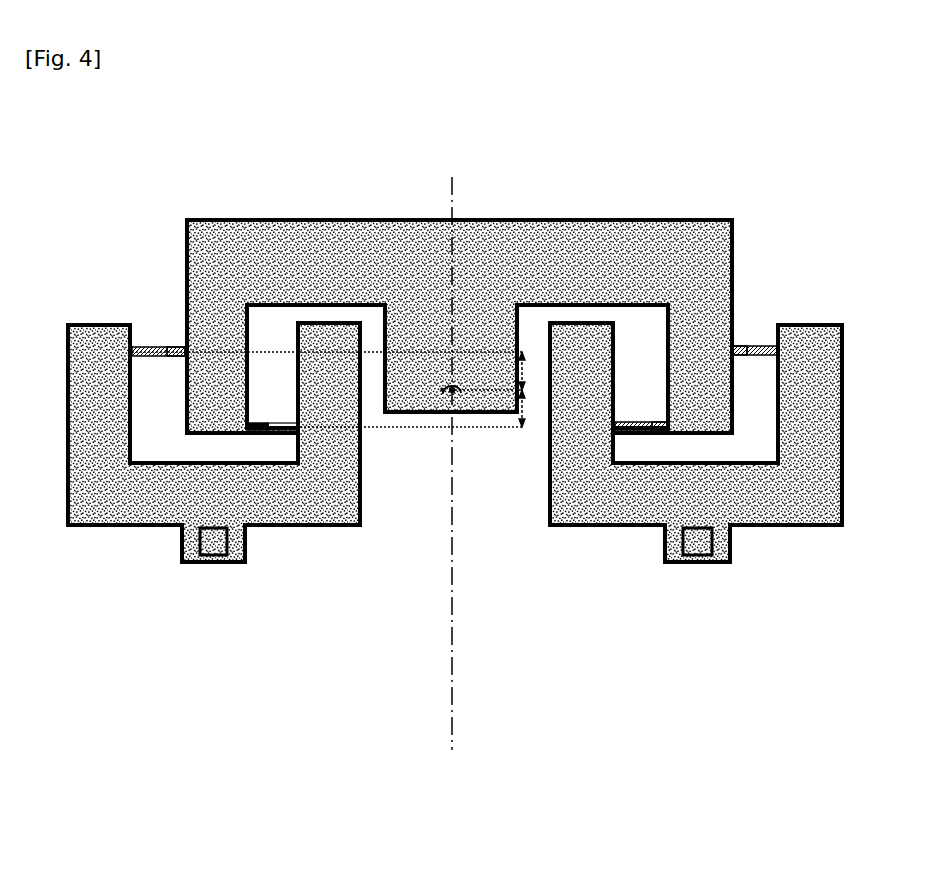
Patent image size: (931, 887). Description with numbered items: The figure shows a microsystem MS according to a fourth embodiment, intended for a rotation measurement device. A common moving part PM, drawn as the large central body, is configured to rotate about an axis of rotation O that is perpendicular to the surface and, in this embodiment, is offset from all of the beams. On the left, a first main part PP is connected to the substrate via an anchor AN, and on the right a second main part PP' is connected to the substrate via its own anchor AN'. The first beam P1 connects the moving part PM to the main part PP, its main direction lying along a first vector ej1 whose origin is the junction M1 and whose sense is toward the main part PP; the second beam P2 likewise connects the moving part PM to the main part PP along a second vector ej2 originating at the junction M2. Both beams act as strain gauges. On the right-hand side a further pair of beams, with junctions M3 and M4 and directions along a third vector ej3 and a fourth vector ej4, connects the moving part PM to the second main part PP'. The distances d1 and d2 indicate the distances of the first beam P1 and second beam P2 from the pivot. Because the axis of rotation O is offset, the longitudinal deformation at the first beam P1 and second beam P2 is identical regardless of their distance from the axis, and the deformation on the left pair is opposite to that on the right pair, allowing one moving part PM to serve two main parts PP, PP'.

The microsystem MS is at (233, 134).
The moving part PM is at (366, 233).
The first main part PP is at (202, 399).
The second main part PP' is at (696, 399).
The first beam P1 is at (155, 345).
The second beam P2 is at (290, 422).
The junction of the moving part with the first beam M1 is at (173, 340).
The junction with the second beam M2 is at (244, 443).
The junction with the third beam M3 is at (755, 336).
The junction of the moving part with the fourth beam M4 is at (641, 410).
The first vector ej1 is at (167, 368).
The second vector ej2 is at (280, 443).
The third vector ej3 is at (748, 366).
The fourth vector ej4 is at (665, 442).
The anchor AN is at (234, 607).
The anchor AN' is at (719, 607).
The axis of rotation O is at (454, 463).
The distance to the pivot of the first beam d1 is at (339, 371).
The distance to the pivot of the second beam d2 is at (407, 408).